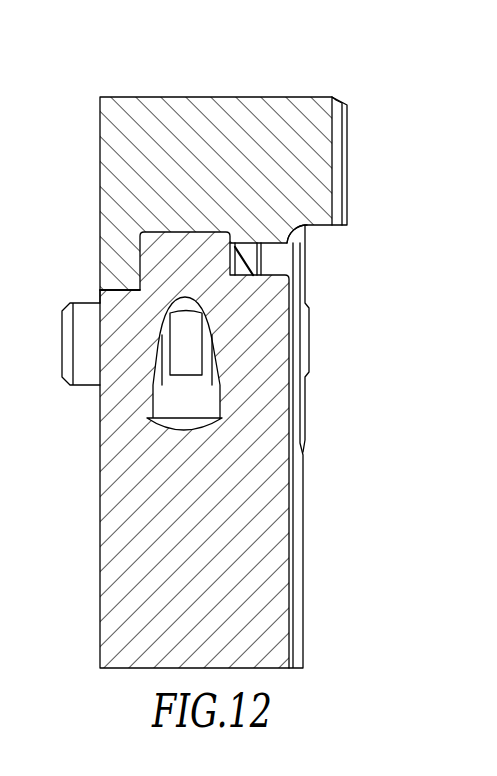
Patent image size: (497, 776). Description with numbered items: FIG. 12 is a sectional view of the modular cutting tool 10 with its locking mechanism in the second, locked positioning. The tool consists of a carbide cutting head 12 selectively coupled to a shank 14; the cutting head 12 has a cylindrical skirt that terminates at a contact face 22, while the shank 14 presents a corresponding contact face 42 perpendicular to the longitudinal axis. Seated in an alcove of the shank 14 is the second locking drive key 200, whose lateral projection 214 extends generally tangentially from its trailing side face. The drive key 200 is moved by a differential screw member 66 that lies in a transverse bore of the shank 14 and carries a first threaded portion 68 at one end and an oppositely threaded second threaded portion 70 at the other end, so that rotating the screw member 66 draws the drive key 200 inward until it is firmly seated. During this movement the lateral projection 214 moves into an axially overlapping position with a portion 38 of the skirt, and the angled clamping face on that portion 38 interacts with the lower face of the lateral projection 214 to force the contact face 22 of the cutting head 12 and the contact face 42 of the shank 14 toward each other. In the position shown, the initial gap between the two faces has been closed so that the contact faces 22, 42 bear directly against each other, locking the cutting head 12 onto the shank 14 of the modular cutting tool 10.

The modular cutting tool 10 is at (367, 82).
The cutting head 12 is at (312, 158).
The shank 14 is at (110, 478).
The contact face 22 is at (118, 315).
The portion of skirt 38 is at (278, 284).
The contact face 42 is at (121, 268).
The differential screw member 66 is at (183, 360).
The first threaded portion 68 is at (85, 357).
The second threaded portion 70 is at (208, 392).
The second locking drive key 200 is at (293, 270).
The lateral projection 214 is at (296, 250).